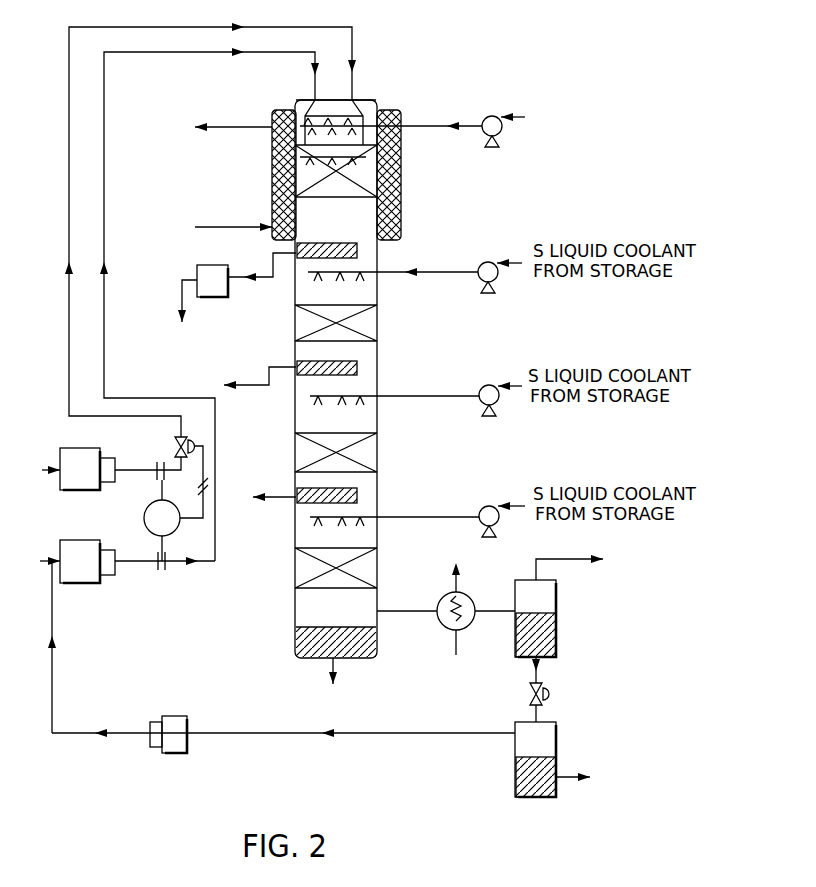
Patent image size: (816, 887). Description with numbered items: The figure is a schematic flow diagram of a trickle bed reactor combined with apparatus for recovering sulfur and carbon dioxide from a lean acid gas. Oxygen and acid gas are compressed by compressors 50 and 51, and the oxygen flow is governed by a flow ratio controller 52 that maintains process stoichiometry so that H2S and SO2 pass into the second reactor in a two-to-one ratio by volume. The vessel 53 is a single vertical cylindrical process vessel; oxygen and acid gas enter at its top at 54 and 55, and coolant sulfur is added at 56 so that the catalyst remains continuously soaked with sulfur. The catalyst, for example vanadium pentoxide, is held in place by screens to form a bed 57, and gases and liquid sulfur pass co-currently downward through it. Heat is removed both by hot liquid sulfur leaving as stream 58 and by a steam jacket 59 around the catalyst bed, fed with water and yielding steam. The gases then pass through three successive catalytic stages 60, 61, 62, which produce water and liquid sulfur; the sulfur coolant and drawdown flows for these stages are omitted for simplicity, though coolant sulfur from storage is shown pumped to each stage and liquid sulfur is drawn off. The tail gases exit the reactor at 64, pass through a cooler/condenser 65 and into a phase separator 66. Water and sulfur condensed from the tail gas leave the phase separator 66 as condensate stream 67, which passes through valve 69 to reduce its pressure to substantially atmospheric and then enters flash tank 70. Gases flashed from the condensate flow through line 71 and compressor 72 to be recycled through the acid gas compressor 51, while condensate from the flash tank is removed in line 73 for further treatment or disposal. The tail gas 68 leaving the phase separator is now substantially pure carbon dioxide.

The oxygen compressor 50 is at (105, 467).
The acid gas compressor 51 is at (116, 628).
The flow ratio controller 52 is at (147, 531).
The vessel 53 is at (378, 366).
The oxygen inlet 54 is at (358, 97).
The acid gas inlet 55 is at (308, 110).
The coolant sulfur inlet 56 is at (424, 126).
The catalyst bed 57 is at (366, 176).
The hot liquid sulfur stream 58 is at (203, 293).
The steam jacket 59 is at (272, 187).
The catalytic stage 60 is at (360, 323).
The catalytic stage 61 is at (365, 456).
The catalytic stage 62 is at (380, 575).
The tail gas outlet 64 is at (408, 614).
The cooler/condenser 65 is at (430, 619).
The phase separator 66 is at (556, 592).
The condensate stream 67 is at (541, 669).
The tail gas 68 is at (542, 559).
The valve 69 is at (550, 695).
The flash tank 70 is at (556, 735).
The line 71 is at (473, 733).
The compressor 72 is at (186, 750).
The line 73 is at (563, 780).